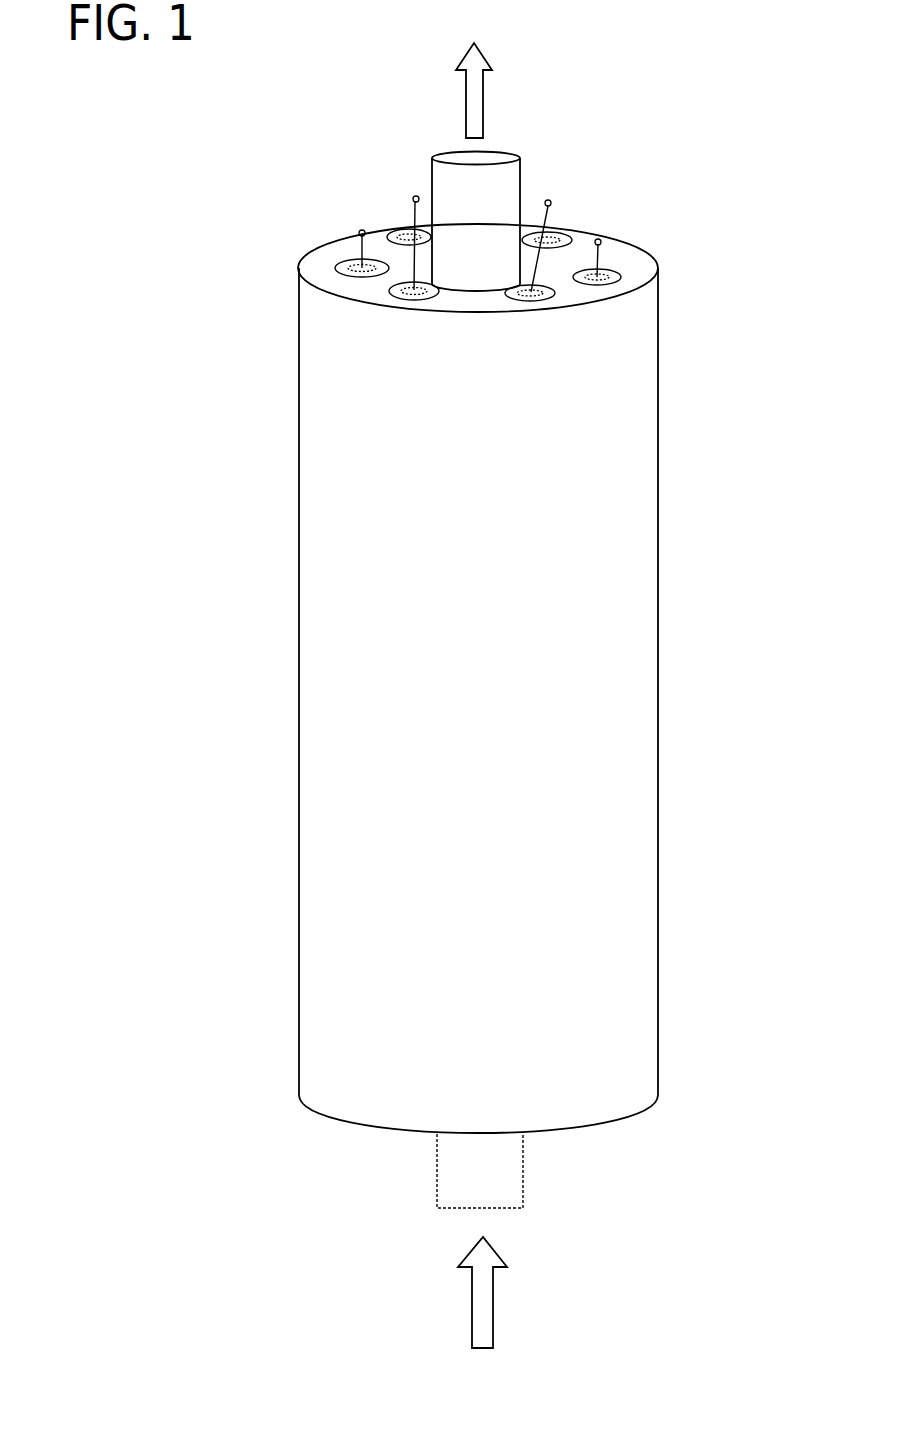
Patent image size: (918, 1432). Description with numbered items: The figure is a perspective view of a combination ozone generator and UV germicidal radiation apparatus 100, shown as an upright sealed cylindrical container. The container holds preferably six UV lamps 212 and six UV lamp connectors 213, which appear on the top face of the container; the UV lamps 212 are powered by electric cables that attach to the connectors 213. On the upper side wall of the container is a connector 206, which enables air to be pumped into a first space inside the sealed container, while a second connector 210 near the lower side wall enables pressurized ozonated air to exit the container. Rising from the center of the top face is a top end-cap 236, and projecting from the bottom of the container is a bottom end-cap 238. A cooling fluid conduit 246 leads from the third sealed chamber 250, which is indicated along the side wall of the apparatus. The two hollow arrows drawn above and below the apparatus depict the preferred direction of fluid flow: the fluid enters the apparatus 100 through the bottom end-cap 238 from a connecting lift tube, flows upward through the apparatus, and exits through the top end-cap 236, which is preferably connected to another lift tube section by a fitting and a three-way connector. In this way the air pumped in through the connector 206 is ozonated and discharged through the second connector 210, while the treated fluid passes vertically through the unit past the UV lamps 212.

The combination ozone generator and UV germicidal radiation apparatus 100 is at (162, 256).
The connector 206 is at (296, 292).
The second connector 210 is at (670, 1082).
The UV lamps 212 is at (404, 228).
The UV lamp connectors 213 is at (596, 246).
The top end-cap 236 is at (522, 195).
The bottom end-cap 238 is at (437, 1183).
The cooling fluid conduit 246 is at (628, 265).
The third sealed chamber 250 is at (299, 527).